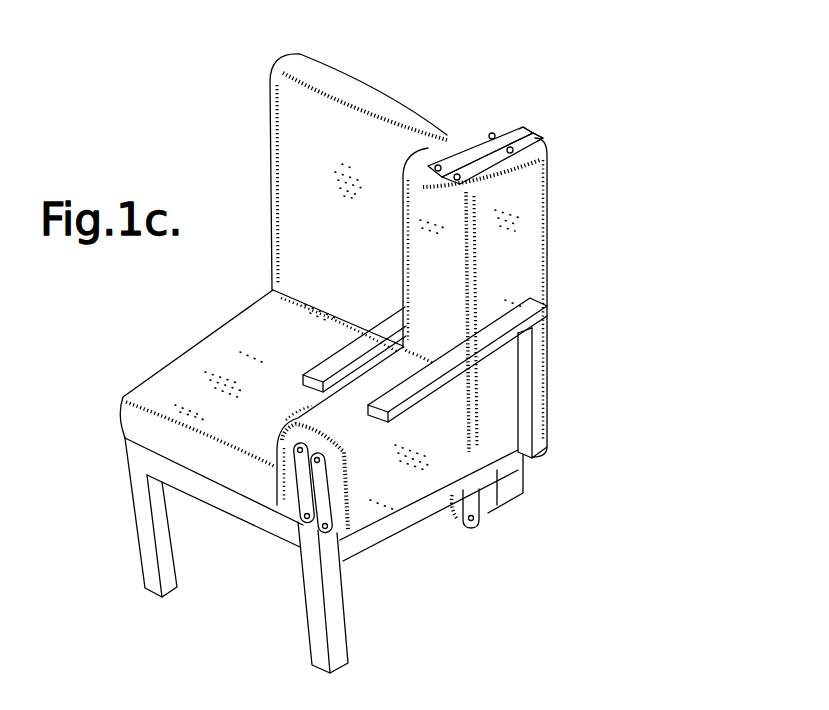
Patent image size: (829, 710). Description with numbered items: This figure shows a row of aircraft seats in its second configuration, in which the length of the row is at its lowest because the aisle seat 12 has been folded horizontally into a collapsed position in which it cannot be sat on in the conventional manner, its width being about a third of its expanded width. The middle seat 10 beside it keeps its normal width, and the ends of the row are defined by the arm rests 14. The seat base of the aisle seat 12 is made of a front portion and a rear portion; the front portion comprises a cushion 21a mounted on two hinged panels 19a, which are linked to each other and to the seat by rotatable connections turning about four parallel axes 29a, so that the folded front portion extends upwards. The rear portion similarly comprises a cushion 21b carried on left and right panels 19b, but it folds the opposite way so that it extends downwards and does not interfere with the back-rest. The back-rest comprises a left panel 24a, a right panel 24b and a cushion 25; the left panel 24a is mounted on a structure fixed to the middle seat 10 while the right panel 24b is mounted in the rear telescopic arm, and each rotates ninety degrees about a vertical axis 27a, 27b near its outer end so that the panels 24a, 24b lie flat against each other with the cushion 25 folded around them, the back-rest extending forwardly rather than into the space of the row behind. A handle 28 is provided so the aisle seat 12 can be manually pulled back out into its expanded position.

The middle seat 10 is at (204, 352).
The aisle seat 12 is at (500, 230).
The arm rest 14 is at (513, 471).
The hinged panel 19a is at (300, 478).
The panel 19b is at (490, 512).
The cushion 21a is at (372, 509).
The cushion 21b is at (436, 510).
The left panel 24a is at (467, 153).
The right panel 24b is at (487, 158).
The cushion 25 is at (447, 137).
The vertical axis 27a is at (490, 133).
The vertical axis 27b is at (527, 130).
The handle 28 is at (543, 143).
The parallel axis 29a is at (305, 527).